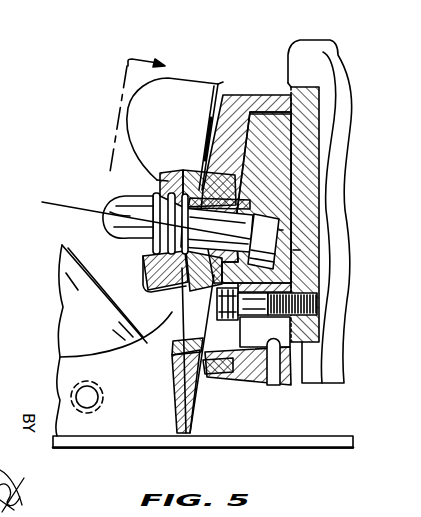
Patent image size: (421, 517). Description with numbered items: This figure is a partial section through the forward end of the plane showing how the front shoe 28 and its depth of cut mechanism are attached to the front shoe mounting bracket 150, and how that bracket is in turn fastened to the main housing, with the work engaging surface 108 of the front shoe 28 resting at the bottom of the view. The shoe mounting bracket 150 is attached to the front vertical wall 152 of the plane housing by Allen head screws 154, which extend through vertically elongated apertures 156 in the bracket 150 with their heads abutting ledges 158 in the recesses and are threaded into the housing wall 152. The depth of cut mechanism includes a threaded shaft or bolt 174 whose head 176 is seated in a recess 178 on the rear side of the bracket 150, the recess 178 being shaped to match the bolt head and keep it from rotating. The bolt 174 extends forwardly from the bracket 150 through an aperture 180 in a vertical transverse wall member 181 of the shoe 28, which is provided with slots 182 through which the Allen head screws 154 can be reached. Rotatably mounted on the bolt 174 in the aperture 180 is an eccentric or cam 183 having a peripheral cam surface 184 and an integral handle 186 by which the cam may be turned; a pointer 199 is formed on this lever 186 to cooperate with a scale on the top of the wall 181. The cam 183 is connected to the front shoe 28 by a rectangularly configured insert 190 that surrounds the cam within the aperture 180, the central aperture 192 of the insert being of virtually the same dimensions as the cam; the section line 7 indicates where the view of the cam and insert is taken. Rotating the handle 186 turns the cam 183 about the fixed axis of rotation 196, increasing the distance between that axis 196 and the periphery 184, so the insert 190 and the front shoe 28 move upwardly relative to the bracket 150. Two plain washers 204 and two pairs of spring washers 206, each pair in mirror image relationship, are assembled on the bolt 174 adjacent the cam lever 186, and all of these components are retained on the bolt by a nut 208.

The section line 7— 7 is at (147, 242).
The front shoe 28 is at (55, 331).
The work engaging surface 108 is at (83, 449).
The front shoe mounting bracket 150 is at (298, 178).
The front vertical wall 152 is at (291, 88).
The Allen head screws 154 is at (218, 307).
The vertically elongated apertures 156 is at (268, 383).
The ledges 158 is at (241, 335).
The bolt 174 is at (263, 231).
The bolt head 176 is at (300, 250).
The recess 178 is at (282, 240).
The aperture 180 is at (246, 193).
The vertical transverse wall member 181 is at (203, 124).
The slots 182 is at (174, 338).
The cam 183 is at (150, 254).
The peripheral cam surface 184 is at (210, 157).
The handle 186 is at (177, 76).
The insert 190 is at (188, 314).
The central aperture 192 is at (217, 230).
The axis of rotation 196 is at (88, 210).
The pointer 199 is at (225, 82).
The plain washers 204 is at (122, 229).
The spring washers 206 is at (188, 171).
The nut 208 is at (122, 199).